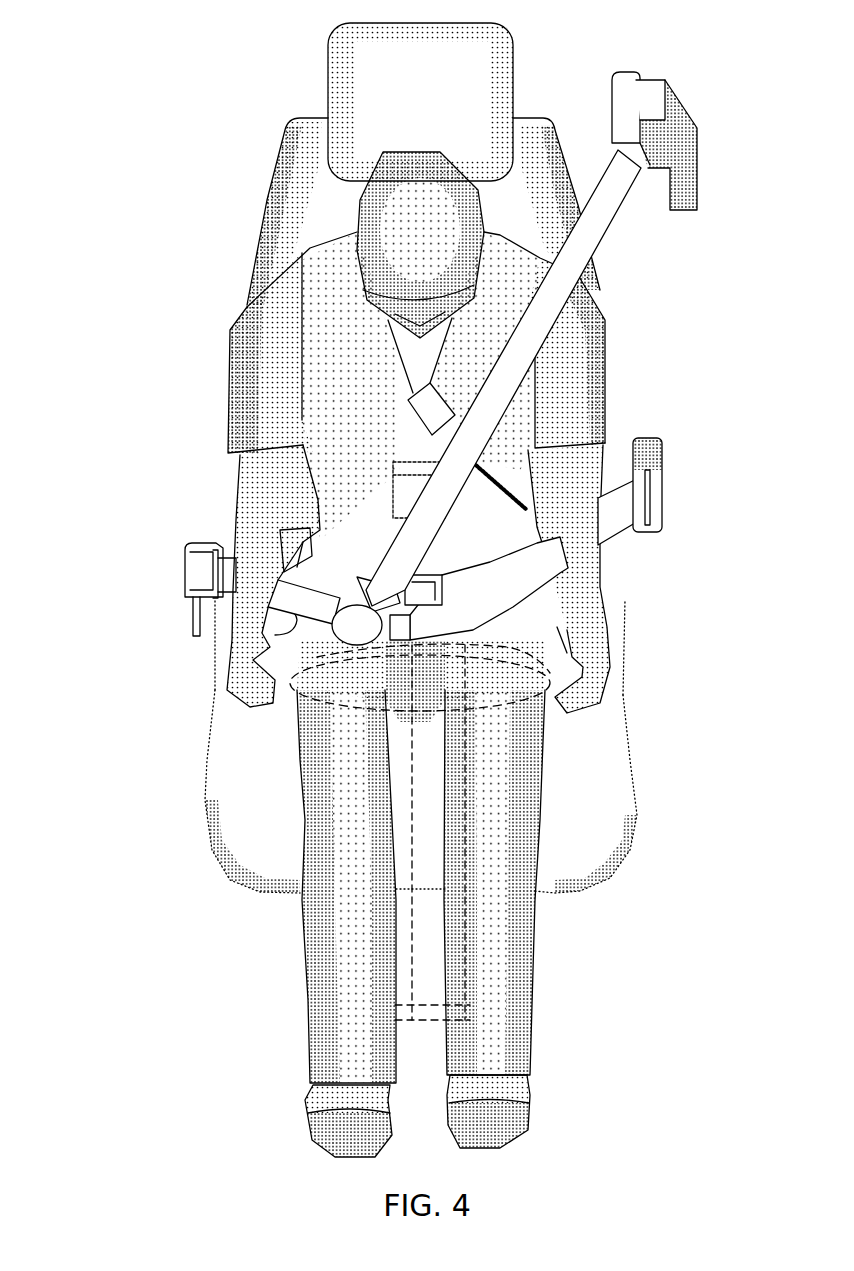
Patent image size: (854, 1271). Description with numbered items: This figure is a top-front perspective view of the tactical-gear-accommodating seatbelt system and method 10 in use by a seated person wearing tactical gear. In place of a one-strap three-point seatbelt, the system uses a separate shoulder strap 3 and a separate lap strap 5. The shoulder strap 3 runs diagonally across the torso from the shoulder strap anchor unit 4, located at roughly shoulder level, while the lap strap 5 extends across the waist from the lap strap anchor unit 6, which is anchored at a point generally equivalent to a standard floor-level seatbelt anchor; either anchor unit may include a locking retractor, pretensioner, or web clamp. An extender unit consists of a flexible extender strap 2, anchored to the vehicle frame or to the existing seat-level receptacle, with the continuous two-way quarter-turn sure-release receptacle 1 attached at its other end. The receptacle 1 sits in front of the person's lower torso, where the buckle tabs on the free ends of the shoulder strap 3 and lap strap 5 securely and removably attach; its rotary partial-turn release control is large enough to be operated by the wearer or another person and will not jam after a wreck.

The tactical-gear-accommodating seatbelt system and method 10 is at (147, 377).
The continuous two-way quarter-turn sure-release receptacle 1 is at (364, 637).
The extender strap 2 is at (229, 568).
The shoulder strap 3 is at (607, 210).
The shoulder strap anchor unit 4 is at (627, 88).
The lap strap 5 is at (615, 520).
The lap strap anchor unit 6 is at (652, 438).